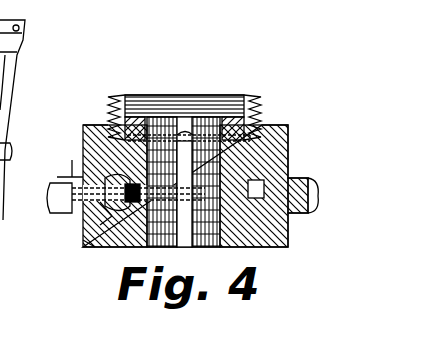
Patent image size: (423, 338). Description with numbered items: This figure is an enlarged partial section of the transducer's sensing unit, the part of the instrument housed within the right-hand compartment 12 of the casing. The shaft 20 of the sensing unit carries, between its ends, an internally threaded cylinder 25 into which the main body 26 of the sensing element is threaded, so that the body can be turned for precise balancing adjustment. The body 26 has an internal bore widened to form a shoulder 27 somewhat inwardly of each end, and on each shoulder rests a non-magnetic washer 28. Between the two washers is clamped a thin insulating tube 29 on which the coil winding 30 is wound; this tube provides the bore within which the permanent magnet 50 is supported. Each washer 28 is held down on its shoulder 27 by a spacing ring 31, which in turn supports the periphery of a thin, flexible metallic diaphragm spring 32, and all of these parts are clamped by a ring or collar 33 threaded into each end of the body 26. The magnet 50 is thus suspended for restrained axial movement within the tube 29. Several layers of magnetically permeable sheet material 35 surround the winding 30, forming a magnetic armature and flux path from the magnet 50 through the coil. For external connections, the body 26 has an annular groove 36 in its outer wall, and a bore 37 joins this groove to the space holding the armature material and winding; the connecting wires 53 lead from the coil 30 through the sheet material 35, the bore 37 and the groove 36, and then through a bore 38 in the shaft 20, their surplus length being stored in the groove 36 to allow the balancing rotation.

The right-hand compartment 12 is at (8, 63).
The shaft 20 is at (56, 205).
The internally threaded cylinder 25 is at (86, 138).
The main body 26 is at (117, 93).
The shoulder 27 is at (113, 128).
The washer 28 is at (262, 128).
The tube or cylinder of insulating material 29 is at (193, 205).
The coil winding 30 is at (162, 248).
The spacing ring 31 is at (189, 128).
The diaphragm spring 32 is at (178, 118).
The ring or collar 33 is at (222, 118).
The magnetically permeable sheet material 35 is at (220, 248).
The annular recess or groove 36 is at (283, 175).
The bore 37 is at (90, 178).
The bore in the shaft 38 is at (82, 246).
The permanent magnet 50 is at (184, 183).
The connecting wires 53 is at (88, 228).